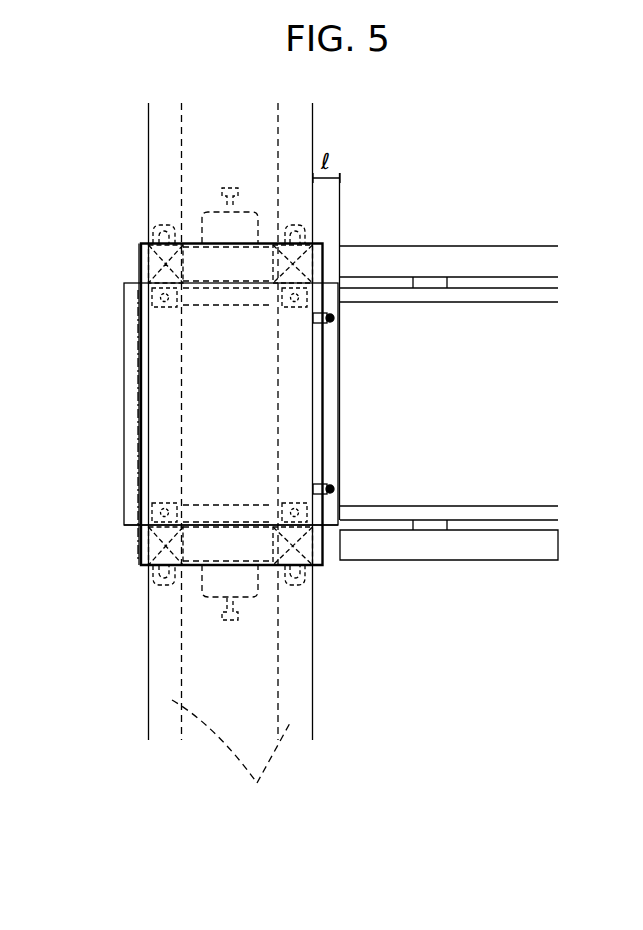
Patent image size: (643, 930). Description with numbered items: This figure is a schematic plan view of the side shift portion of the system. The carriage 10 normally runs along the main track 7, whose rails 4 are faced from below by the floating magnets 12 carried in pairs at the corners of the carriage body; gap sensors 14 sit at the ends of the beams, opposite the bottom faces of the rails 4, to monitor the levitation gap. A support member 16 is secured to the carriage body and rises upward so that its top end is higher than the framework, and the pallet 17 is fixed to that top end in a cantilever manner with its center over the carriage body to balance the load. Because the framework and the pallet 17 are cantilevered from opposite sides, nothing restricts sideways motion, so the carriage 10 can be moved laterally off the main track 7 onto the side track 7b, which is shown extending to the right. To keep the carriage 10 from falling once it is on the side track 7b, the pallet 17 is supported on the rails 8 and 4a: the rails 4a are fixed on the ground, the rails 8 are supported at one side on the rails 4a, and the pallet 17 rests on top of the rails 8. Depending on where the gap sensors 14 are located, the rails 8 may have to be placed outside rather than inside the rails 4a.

The rail 4 is at (231, 756).
The rail 4a is at (490, 262).
The main track 7 is at (202, 737).
The side track 7b is at (408, 246).
The rail 8 is at (205, 297).
The carriage 10 is at (139, 398).
The floating magnet 12 is at (150, 565).
The gap sensor 14 is at (140, 518).
The support member 16 is at (330, 487).
The pallet 17 is at (130, 455).